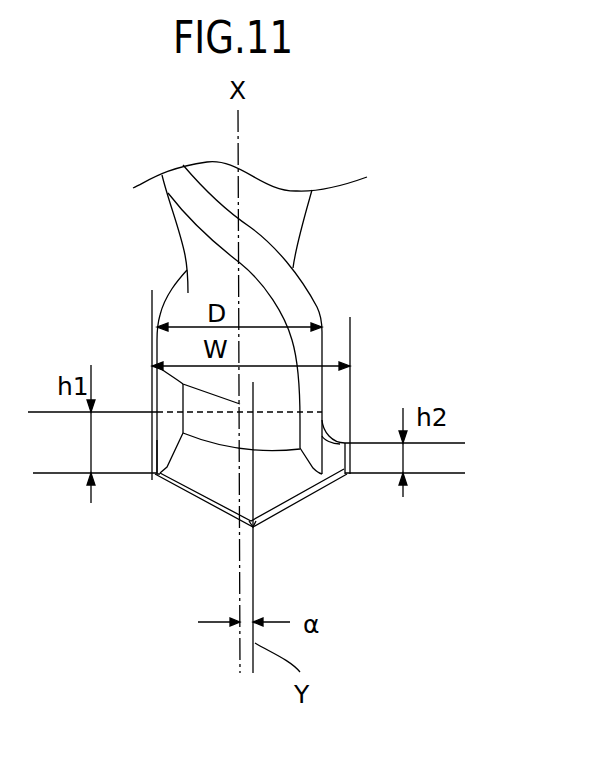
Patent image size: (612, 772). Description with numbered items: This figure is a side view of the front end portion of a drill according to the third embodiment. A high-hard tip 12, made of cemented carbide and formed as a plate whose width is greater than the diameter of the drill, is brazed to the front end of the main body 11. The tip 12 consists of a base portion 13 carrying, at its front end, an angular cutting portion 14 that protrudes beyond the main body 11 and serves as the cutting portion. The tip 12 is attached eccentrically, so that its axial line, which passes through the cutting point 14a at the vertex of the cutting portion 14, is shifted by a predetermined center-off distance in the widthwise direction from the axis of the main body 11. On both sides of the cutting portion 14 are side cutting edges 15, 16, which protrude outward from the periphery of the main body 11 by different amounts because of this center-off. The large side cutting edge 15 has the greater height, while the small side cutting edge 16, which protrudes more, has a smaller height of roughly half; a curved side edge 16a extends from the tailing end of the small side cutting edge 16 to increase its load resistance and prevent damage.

The main body 11 is at (303, 220).
The high-hard tip 12 is at (207, 513).
The base portion 13 is at (280, 422).
The angular cutting portion 14 is at (292, 505).
The cutting point 14a is at (253, 530).
The side cutting edge 15 is at (152, 460).
The side cutting edge 16 is at (352, 458).
The curved side edge 16a is at (333, 437).